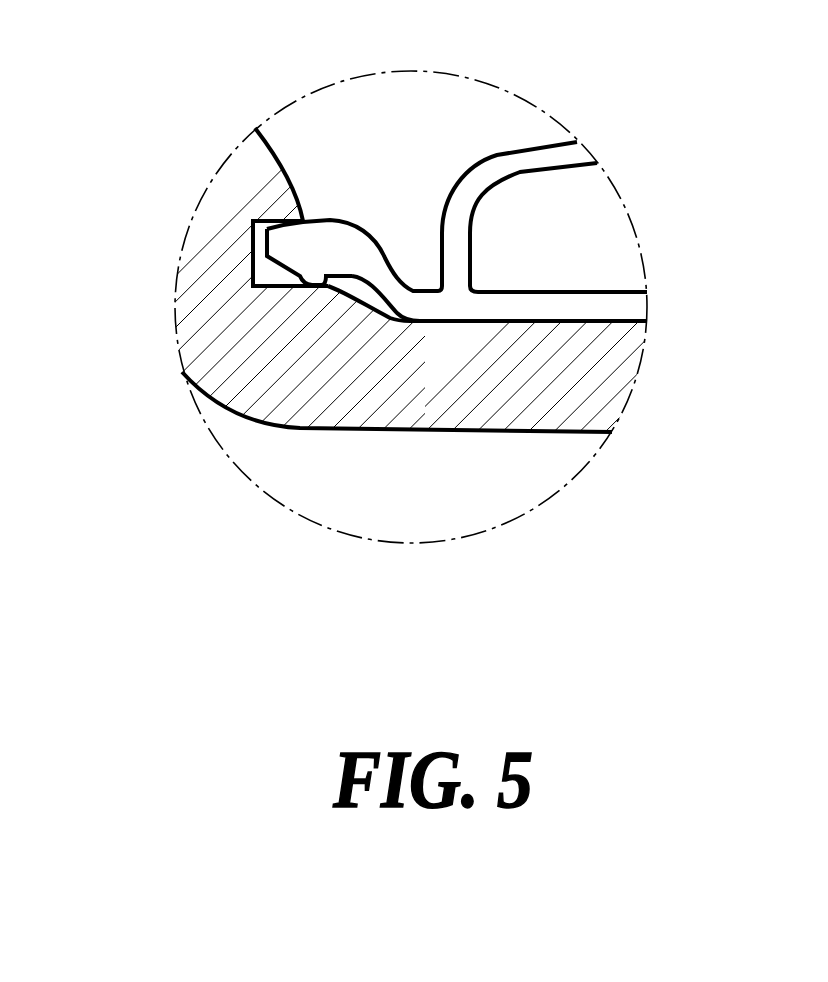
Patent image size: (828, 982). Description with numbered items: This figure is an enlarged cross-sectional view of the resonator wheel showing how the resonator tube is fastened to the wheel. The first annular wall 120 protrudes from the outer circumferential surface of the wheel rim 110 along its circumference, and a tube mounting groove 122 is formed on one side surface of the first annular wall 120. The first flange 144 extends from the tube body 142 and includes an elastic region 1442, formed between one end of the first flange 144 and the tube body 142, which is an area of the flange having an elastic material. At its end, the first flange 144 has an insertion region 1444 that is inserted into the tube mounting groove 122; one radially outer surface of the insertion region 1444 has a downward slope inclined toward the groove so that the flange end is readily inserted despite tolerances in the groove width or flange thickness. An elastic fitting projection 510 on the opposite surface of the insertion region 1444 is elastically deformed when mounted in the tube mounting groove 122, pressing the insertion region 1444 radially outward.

The wheel rim 110 is at (458, 433).
The first annular wall 120 is at (212, 204).
The tube mounting groove 122 is at (253, 253).
The tube body 142 is at (517, 147).
The first flange 144 is at (433, 285).
The elastic region 1442 is at (383, 292).
The insertion region 1444 is at (313, 218).
The elastic fitting projection 510 is at (310, 288).